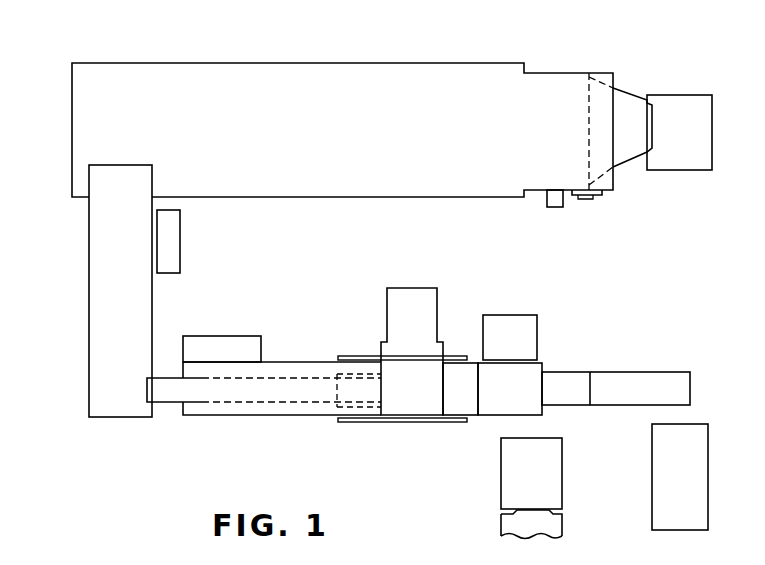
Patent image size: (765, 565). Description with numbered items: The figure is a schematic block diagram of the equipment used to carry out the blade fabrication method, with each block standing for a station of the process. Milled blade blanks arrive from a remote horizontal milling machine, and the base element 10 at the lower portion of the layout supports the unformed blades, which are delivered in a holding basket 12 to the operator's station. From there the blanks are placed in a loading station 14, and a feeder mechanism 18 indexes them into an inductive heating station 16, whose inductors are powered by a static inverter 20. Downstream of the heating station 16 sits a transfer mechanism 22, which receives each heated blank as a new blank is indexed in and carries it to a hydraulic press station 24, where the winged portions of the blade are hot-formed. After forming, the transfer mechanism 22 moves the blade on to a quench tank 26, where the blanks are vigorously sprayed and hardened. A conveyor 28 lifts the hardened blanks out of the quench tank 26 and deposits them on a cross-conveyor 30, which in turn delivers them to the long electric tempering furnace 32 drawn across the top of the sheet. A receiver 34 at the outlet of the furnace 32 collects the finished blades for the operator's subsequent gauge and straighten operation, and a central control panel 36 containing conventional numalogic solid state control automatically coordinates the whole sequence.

The machine base 10 is at (504, 522).
The holding basket 12 is at (506, 468).
The loading station 14 is at (562, 351).
The inductive heating station 16 is at (535, 418).
The feeder mechanism 18 is at (632, 361).
The static inverter 20 is at (517, 304).
The transfer mechanism 22 is at (417, 429).
The hydraulic press station 24 is at (381, 336).
The quench tank 26 is at (305, 358).
The conveyor 28 is at (193, 405).
The cross-conveyor 30 is at (84, 328).
The electric tempering furnace 32 is at (244, 60).
The receiver 34 is at (697, 95).
The central control panel 36 is at (711, 452).